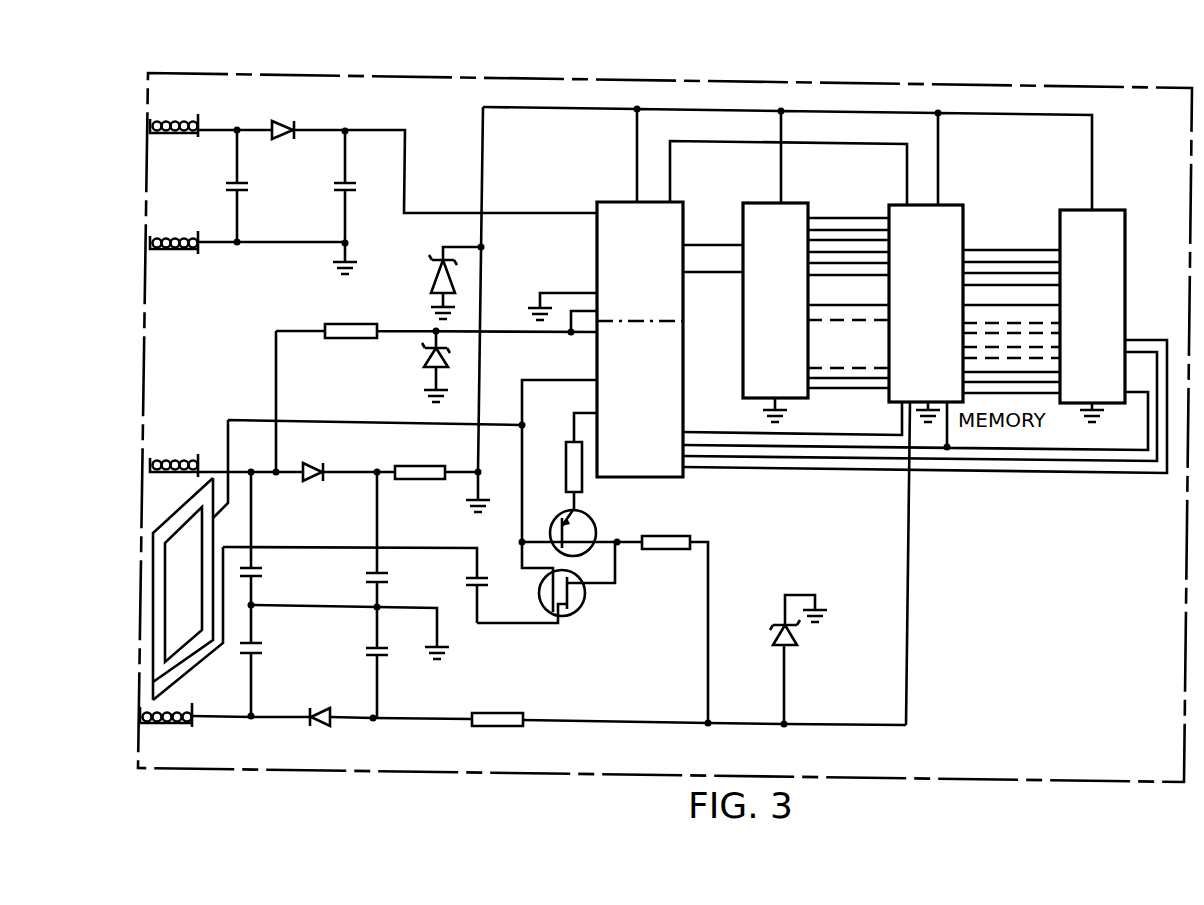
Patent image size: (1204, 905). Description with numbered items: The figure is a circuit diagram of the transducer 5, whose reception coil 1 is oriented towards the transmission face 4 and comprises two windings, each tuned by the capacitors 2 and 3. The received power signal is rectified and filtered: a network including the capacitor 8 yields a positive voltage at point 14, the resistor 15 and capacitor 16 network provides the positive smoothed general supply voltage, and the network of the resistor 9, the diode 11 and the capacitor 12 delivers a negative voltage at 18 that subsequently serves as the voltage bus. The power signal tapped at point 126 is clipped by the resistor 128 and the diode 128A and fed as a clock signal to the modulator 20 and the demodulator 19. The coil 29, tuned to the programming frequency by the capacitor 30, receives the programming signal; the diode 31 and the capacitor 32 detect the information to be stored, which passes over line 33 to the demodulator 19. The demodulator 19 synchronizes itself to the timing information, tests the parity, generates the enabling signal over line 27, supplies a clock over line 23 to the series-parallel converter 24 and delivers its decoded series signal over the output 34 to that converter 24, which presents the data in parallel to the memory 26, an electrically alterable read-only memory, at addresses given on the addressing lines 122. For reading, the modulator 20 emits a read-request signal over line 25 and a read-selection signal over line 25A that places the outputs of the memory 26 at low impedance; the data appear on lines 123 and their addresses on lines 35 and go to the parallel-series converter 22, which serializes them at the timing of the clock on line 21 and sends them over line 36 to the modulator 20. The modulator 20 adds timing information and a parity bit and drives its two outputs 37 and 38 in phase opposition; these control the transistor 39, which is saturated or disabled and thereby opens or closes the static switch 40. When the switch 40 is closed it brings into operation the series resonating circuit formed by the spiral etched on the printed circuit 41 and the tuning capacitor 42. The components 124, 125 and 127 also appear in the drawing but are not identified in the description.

The reception coil 1 is at (163, 722).
The capacitor 2 is at (264, 574).
The capacitor 3 is at (264, 648).
The transmission face 4 is at (142, 520).
The transducer 5 is at (1194, 106).
The capacitor 8 is at (398, 594).
The resistor 9 is at (496, 726).
The diode 11 is at (312, 724).
The capacitor 12 is at (383, 656).
The point 14 is at (377, 472).
The resistor 15 is at (433, 452).
The capacitor 16 is at (472, 500).
The negative voltage point 18 is at (586, 293).
The demodulator 19 is at (627, 268).
The modulator 20 is at (619, 398).
The clock line 21 is at (1105, 463).
The parallel-series converter 22 is at (1079, 311).
The clock output line 23 is at (710, 273).
The series-parallel converter 24 is at (762, 302).
The read-request signal line 25 is at (1062, 453).
The read-selection signal line 25A is at (869, 436).
The memory 26 is at (913, 308).
The enabling signal line 27 is at (789, 160).
The coil 29 is at (172, 120).
The capacitor 30 is at (236, 184).
The diode 31 is at (289, 100).
The capacitor 32 is at (343, 184).
The line 33 is at (505, 214).
The decoding output 34 is at (727, 222).
The output lines 35 is at (1022, 233).
The line 36 is at (1140, 474).
The modulator output 37 is at (574, 424).
The modulator output 38 is at (520, 400).
The transistor 39 is at (598, 528).
The static switch 40 is at (574, 612).
The printed circuit 41 is at (155, 698).
The tuning capacitor 42 is at (484, 582).
The addressing lines 122 is at (864, 360).
The data lines 123 is at (1014, 338).
The zener diode 124 is at (800, 640).
The ground line 125 is at (688, 726).
The point 126 is at (267, 440).
The zener diode 127 is at (436, 280).
The resistor 128 is at (372, 304).
The diode 128A is at (426, 362).